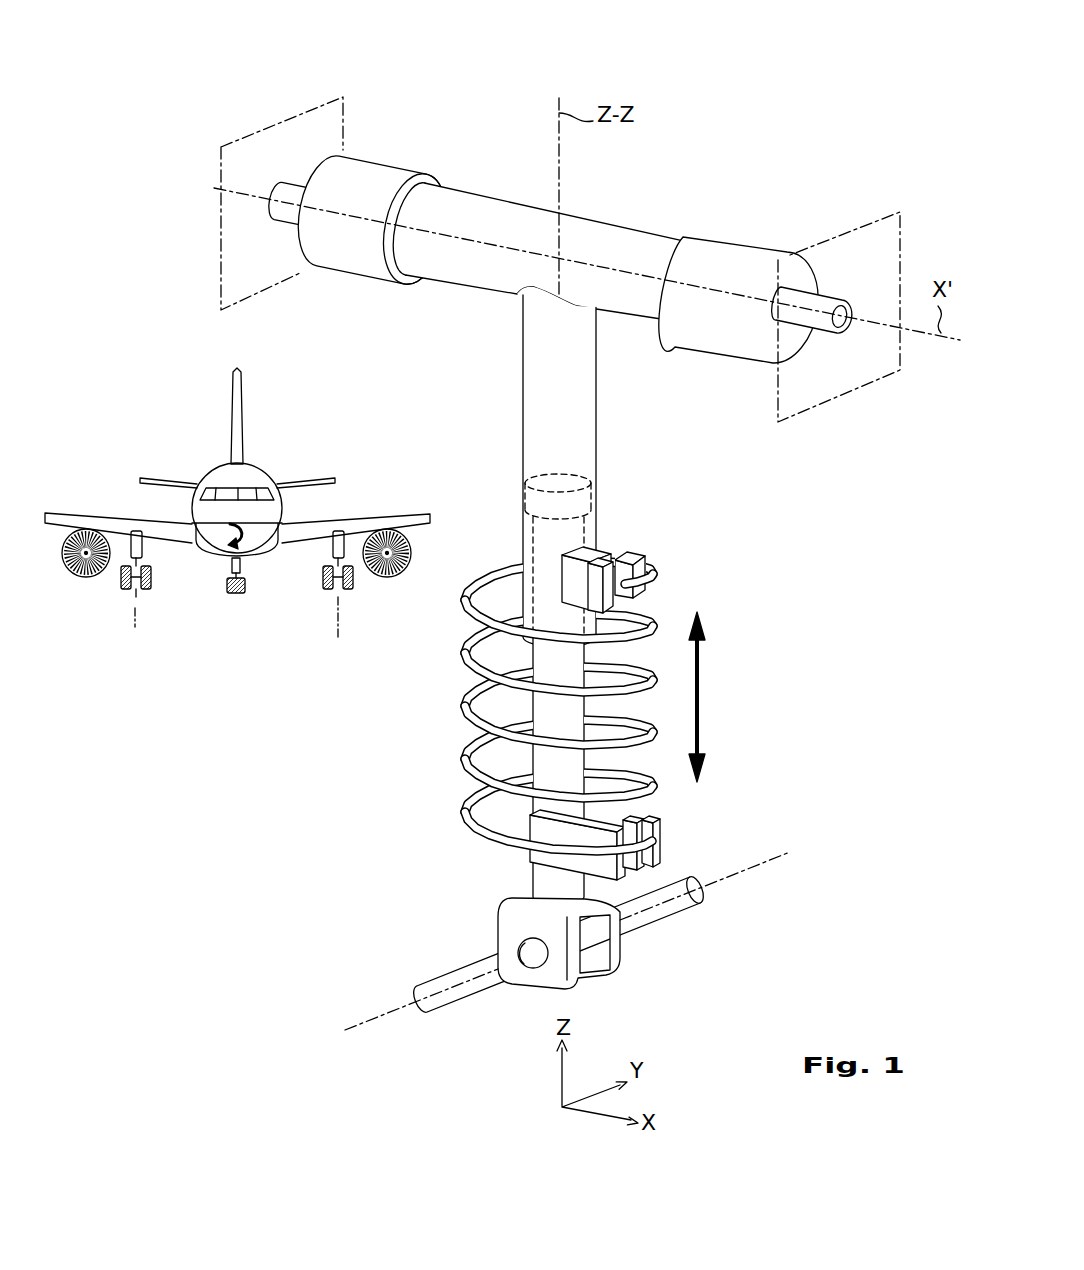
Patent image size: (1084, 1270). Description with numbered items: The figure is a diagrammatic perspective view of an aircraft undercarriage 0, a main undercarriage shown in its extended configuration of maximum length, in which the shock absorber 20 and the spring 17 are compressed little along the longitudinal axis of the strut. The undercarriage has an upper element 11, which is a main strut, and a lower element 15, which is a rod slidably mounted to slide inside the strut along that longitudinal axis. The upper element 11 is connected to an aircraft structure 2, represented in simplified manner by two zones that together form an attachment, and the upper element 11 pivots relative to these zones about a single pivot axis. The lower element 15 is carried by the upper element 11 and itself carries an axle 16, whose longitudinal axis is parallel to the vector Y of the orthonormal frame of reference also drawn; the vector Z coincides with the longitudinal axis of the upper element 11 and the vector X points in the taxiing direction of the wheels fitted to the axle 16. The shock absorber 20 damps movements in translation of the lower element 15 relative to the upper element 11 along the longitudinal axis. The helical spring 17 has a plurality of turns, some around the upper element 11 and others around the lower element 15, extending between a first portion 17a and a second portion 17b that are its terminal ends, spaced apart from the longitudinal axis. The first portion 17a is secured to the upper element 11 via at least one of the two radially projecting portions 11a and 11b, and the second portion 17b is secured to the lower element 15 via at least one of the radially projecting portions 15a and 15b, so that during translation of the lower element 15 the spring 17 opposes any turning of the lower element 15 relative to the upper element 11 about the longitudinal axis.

The aircraft undercarriage 0 is at (391, 82).
The aircraft structure 2 is at (872, 235).
The upper element 11 is at (522, 408).
The portion of the upper element 11a is at (612, 560).
The portion of the upper element 11b is at (644, 553).
The lower element 15 is at (532, 758).
The portion of the lower element 15a is at (530, 858).
The portion of the lower element 15b is at (655, 852).
The axle 16 is at (681, 907).
The spring 17 is at (463, 655).
The first portion of the spring 17a is at (645, 597).
The second portion of the spring 17b is at (657, 840).
The shock absorber 20 is at (522, 541).